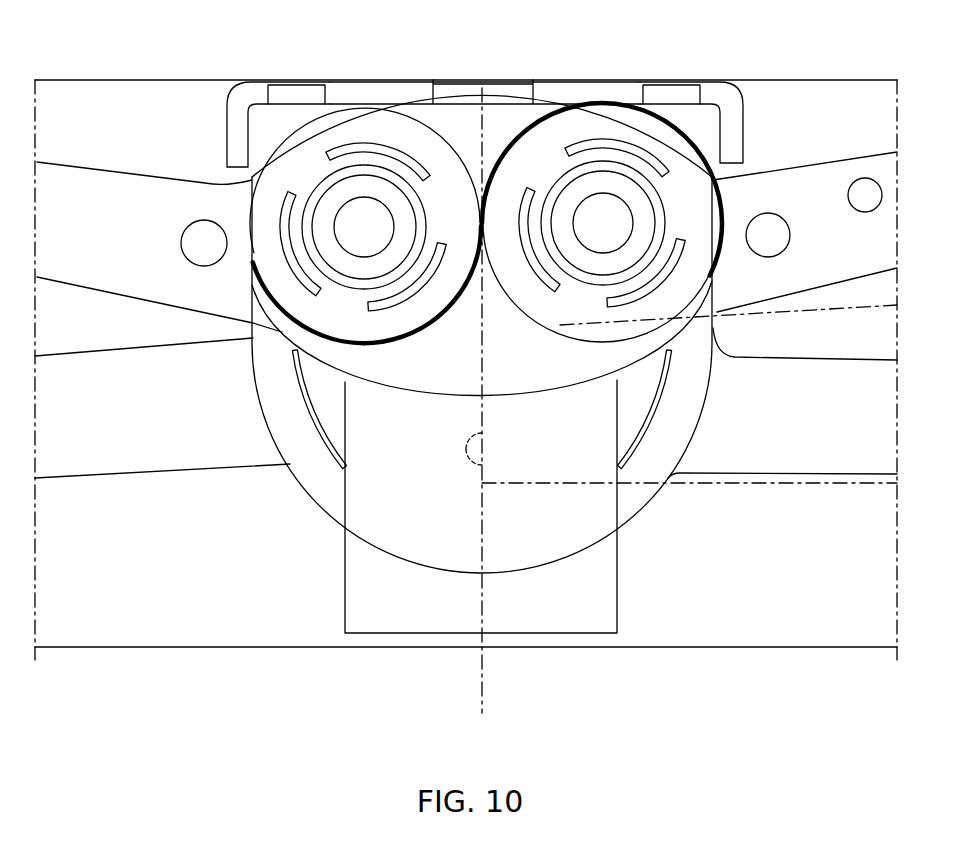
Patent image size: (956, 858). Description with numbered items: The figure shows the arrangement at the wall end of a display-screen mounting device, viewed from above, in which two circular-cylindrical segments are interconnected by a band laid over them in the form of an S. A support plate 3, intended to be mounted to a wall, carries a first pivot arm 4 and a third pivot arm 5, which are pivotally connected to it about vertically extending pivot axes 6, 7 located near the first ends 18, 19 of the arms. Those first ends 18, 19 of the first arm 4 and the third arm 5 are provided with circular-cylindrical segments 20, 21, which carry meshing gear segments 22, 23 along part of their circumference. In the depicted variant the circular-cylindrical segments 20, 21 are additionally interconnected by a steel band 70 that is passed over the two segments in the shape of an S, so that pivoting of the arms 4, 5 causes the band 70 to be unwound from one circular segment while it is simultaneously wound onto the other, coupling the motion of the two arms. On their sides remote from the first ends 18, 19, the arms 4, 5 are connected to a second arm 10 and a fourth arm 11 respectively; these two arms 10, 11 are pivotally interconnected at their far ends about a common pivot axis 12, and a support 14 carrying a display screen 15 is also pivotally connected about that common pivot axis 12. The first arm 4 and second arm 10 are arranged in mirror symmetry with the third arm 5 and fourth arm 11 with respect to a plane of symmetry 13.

The support plate 3 is at (484, 122).
The first pivot arm 4 is at (815, 192).
The third pivot arm 5 is at (102, 190).
The pivot axis 6 is at (601, 210).
The pivot axis 7 is at (366, 210).
The second arm 10 is at (797, 427).
The fourth arm 11 is at (147, 427).
The common pivot axis 12 is at (488, 328).
The plane of symmetry 13 is at (500, 663).
The support 14 is at (403, 598).
The display screen 15 is at (238, 590).
The first end 18 is at (733, 202).
The first end 19 is at (233, 215).
The circular-cylindrical segment 20 is at (682, 157).
The circular-cylindrical segment 21 is at (287, 163).
The gear segment 22 is at (520, 127).
The gear segment 23 is at (443, 175).
The steel band 70 is at (416, 335).